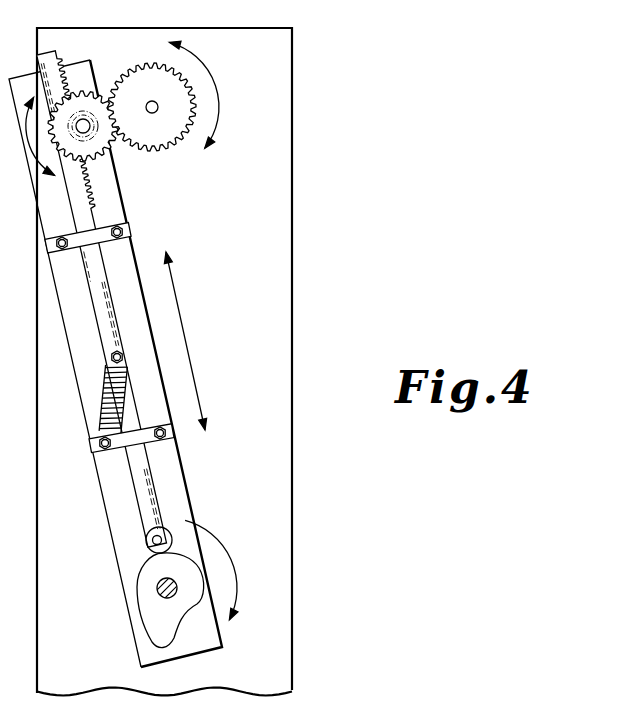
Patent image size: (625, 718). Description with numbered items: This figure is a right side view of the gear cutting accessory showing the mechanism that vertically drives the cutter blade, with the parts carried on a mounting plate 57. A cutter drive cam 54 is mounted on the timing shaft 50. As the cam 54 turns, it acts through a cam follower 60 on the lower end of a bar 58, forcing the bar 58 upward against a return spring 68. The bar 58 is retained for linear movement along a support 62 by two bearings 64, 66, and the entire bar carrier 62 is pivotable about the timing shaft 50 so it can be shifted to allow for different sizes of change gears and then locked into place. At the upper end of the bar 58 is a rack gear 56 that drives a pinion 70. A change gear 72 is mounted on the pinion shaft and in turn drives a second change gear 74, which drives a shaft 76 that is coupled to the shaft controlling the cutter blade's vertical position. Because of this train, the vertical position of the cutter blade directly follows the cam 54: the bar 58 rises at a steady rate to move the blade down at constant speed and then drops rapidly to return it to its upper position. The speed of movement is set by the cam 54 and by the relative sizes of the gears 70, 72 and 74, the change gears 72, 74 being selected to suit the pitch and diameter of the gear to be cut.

The timing shaft 50 is at (157, 588).
The cutter drive cam 54 is at (139, 617).
The rack gear 56 is at (90, 194).
The mounting plate 57 is at (292, 244).
The bar 58 is at (160, 496).
The cam follower 60 is at (148, 547).
The support 62 is at (62, 316).
The bearing 64 is at (130, 243).
The bearing 66 is at (165, 439).
The return spring 68 is at (102, 403).
The pinion 70 is at (87, 110).
The change gear 72 is at (101, 152).
The second change gear 74 is at (177, 147).
The shaft 76 is at (158, 108).